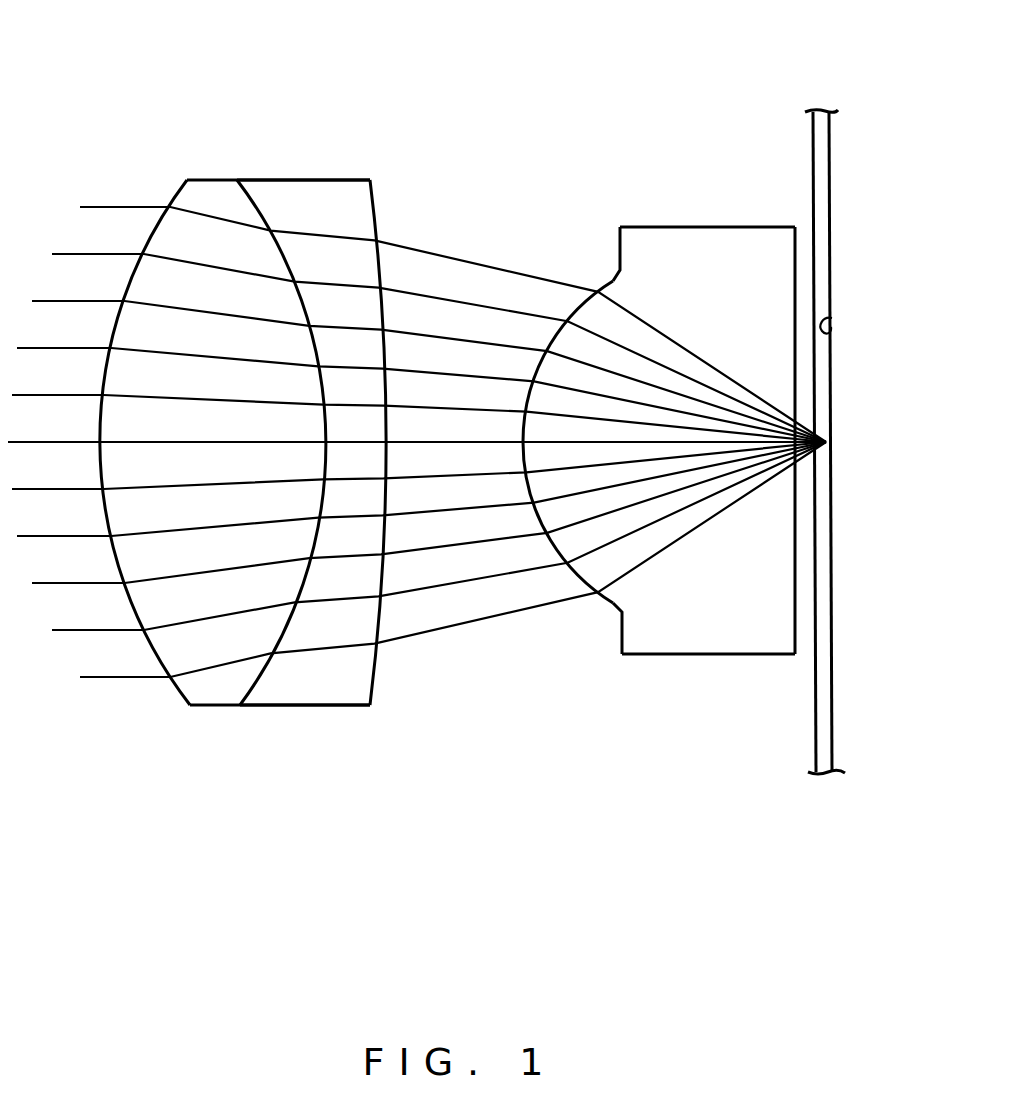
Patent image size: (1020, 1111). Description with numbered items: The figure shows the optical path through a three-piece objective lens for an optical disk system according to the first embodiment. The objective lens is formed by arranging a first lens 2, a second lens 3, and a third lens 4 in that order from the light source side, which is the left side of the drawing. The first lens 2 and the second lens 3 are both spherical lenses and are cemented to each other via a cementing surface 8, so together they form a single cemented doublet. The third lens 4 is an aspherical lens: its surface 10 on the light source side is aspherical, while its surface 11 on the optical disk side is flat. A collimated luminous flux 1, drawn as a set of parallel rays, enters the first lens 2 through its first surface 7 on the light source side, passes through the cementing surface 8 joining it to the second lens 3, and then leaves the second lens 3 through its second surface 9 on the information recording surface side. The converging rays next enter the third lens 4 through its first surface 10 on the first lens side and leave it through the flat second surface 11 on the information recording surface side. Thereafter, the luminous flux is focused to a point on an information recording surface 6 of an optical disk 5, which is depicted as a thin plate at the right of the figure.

The collimated luminous flux 1 is at (93, 207).
The first lens 2 is at (235, 380).
The second lens 3 is at (336, 380).
The third lens 4 is at (664, 369).
The optical disk 5 is at (823, 203).
The information recording surface 6 is at (832, 318).
The first surface 7 is at (177, 192).
The cementing surface 8 is at (253, 200).
The second surface 9 is at (377, 207).
The first surface 10 is at (600, 280).
The second surface 11 is at (795, 243).